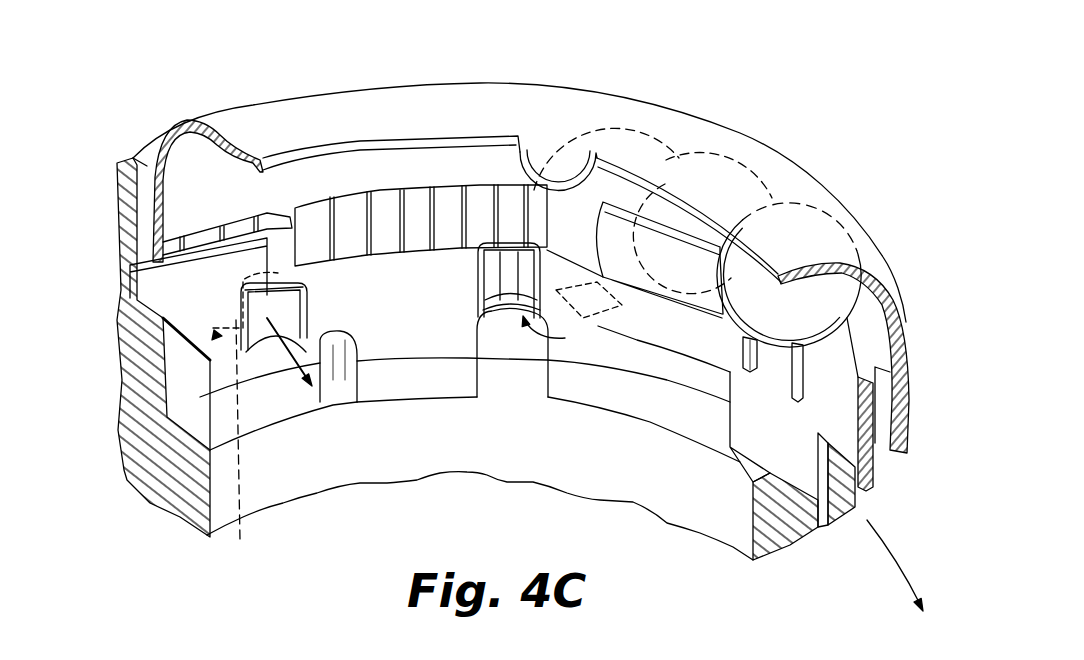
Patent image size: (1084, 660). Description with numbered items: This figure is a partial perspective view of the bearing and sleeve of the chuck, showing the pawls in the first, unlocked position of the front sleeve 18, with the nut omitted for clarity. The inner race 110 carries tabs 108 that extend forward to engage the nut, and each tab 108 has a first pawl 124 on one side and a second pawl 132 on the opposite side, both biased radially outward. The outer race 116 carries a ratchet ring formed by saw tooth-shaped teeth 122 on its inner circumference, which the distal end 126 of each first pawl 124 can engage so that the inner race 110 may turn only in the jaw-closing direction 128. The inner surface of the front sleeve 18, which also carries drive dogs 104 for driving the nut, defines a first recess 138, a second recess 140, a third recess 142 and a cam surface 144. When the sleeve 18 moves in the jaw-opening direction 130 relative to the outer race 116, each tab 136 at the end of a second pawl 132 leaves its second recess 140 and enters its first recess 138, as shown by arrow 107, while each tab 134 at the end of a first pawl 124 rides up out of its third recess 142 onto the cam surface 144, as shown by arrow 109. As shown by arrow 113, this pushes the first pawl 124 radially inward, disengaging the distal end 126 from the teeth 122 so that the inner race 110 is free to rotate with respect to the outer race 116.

The front sleeve 18 is at (128, 434).
The drive dog 104 is at (317, 372).
The arrow 107 is at (547, 343).
The tab 108 is at (743, 456).
The arrow 109 is at (297, 330).
The inner race 110 is at (673, 227).
The arrow 113 is at (258, 209).
The outer race 116 is at (613, 98).
The saw tooth-shaped teeth 122 is at (425, 212).
The first pawl 124 is at (115, 236).
The distal end 126 is at (303, 235).
The jaw-closing direction 128 is at (345, 229).
The jaw-opening direction 130 is at (895, 553).
The second pawl 132 is at (670, 347).
The tab 134 is at (330, 342).
The tab 136 is at (510, 278).
The first recess 138 is at (522, 255).
The second recess 140 is at (577, 295).
The third recess 142 is at (383, 286).
The cam surface 144 is at (242, 444).